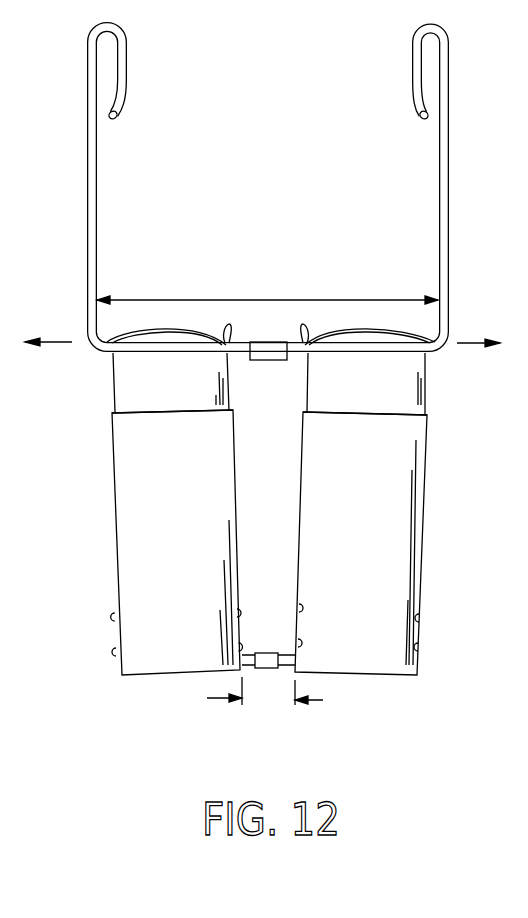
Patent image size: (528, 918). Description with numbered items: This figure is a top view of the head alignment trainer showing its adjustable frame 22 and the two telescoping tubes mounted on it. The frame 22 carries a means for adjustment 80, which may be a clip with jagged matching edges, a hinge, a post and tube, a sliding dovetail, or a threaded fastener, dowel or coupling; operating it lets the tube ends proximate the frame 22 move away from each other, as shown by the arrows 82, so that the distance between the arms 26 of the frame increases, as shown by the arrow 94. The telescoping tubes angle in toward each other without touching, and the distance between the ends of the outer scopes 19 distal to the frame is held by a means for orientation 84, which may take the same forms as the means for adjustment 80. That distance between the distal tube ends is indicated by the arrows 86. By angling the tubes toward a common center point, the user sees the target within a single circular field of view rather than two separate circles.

The outer scopes 19 is at (115, 541).
The adjustable frame 22 is at (368, 355).
The arms 26 is at (87, 122).
The means for adjustment 80 is at (265, 360).
The arrows 82 is at (65, 342).
The means for orientation 84 is at (263, 650).
The arrows 86 is at (222, 698).
The arrow 94 is at (268, 300).